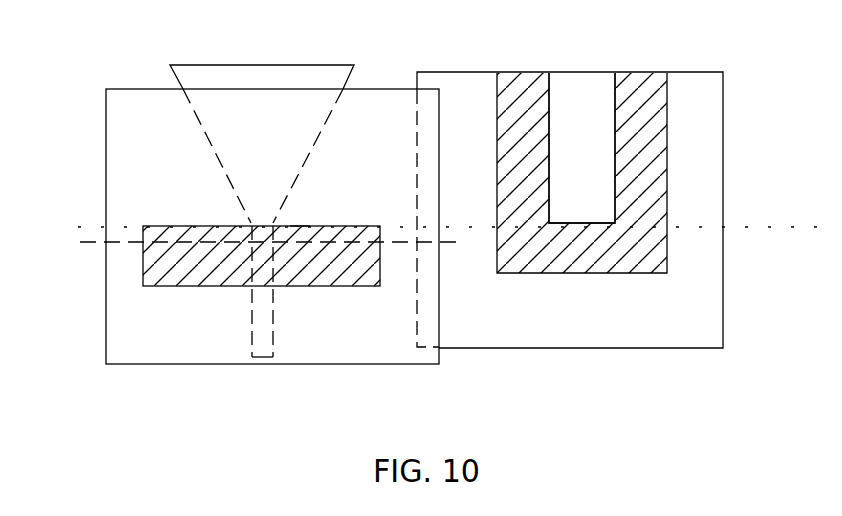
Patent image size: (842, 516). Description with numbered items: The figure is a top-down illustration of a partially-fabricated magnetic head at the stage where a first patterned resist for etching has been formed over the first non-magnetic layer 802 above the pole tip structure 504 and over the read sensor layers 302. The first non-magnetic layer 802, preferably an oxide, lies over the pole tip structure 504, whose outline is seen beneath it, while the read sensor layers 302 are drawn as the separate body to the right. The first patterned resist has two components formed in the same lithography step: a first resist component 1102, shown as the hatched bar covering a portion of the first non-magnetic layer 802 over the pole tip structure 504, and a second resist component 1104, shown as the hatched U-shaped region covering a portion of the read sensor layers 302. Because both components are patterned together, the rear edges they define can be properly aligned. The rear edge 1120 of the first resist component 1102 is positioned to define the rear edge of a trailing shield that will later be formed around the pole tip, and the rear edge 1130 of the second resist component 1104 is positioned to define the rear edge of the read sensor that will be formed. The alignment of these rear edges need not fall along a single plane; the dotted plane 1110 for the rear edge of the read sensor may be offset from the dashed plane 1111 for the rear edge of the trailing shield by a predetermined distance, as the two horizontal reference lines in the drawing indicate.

The first non-magnetic layer 802 is at (106, 135).
The read sensor layers 302 is at (706, 152).
The second resist component 1104 is at (533, 88).
The rear edge of second resist component 1130 is at (580, 223).
The first resist component 1102 is at (207, 228).
The pole tip structure 504 is at (258, 222).
The rear edge of first resist component 1120 is at (300, 224).
The plane for rear edge of trailing shield 1111 is at (97, 244).
The plane for rear edge of read sensor 1110 is at (748, 229).